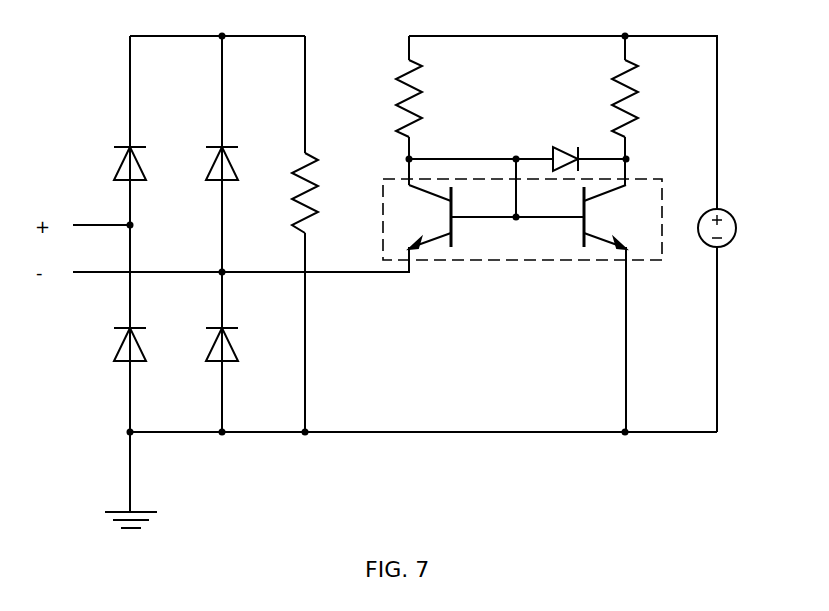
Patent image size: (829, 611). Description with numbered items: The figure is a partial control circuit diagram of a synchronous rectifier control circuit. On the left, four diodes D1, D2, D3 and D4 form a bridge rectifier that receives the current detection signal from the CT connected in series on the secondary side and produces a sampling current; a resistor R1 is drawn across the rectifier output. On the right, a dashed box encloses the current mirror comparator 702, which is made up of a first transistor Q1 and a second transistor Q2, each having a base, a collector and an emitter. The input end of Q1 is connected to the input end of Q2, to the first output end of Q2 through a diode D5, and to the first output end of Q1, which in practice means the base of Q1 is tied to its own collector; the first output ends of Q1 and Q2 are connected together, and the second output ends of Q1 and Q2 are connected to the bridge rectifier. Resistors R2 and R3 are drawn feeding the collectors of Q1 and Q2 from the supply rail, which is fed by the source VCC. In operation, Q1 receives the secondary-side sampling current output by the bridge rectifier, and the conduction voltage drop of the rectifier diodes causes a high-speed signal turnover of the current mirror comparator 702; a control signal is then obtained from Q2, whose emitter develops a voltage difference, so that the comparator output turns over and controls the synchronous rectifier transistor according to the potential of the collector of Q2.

The diode D1 is at (148, 163).
The diode D2 is at (239, 163).
The diode D3 is at (148, 344).
The diode D4 is at (239, 344).
The diode D5 is at (570, 145).
The resistor R1 is at (287, 193).
The resistor R2 is at (391, 98).
The resistor R3 is at (607, 98).
The first transistor Q1 is at (424, 217).
The second transistor Q2 is at (613, 217).
The current mirror comparator 702 is at (543, 267).
The supply voltage source VCC is at (742, 228).